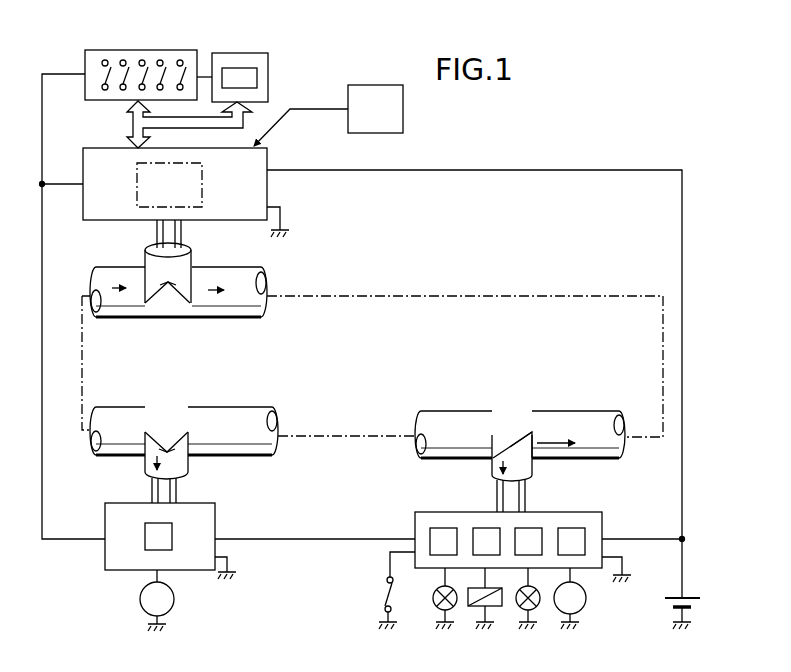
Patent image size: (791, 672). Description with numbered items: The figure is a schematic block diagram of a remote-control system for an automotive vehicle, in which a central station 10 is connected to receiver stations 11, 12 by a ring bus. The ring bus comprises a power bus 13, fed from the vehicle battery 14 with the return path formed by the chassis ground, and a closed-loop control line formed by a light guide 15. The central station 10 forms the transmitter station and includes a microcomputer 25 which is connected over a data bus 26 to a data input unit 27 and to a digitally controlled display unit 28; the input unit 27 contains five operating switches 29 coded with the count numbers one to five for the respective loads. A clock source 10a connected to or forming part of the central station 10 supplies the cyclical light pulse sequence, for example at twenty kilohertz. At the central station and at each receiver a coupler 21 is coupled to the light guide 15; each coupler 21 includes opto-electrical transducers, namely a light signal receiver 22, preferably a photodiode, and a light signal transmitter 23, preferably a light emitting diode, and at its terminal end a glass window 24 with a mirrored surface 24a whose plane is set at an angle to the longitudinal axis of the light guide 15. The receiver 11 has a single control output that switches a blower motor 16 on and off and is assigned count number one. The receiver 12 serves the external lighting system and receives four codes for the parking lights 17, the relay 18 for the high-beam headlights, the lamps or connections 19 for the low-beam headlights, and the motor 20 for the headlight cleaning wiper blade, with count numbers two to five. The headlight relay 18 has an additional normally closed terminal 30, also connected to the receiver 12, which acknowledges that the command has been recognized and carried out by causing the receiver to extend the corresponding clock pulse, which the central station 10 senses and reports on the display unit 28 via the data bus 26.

The central station 10 is at (262, 162).
The clock source 10a is at (394, 118).
The receiver station 11 is at (108, 568).
The receiver station 12 is at (415, 527).
The power bus 13 is at (505, 170).
The vehicle battery 14 is at (668, 604).
The light guide 15 is at (197, 417).
The blower motor 16 is at (175, 600).
The parking lights 17 is at (433, 598).
The relay for high-beam headlights 18 is at (477, 598).
The lamps or connections for low-beam headlights 19 is at (537, 598).
The motor for headlight cleaning wiper blade 20 is at (586, 602).
The coupler 21 is at (197, 282).
The light signal receiver 22 is at (181, 233).
The light signal transmitter 23 is at (157, 234).
The glass window 24 is at (150, 275).
The mirrored surface 24a is at (155, 440).
The microcomputer 25 is at (202, 188).
The data bus 26 is at (135, 122).
The input unit 27 is at (208, 16).
The display unit 28 is at (270, 70).
The operating switches 29 is at (85, 64).
The additional terminal 30 is at (383, 598).